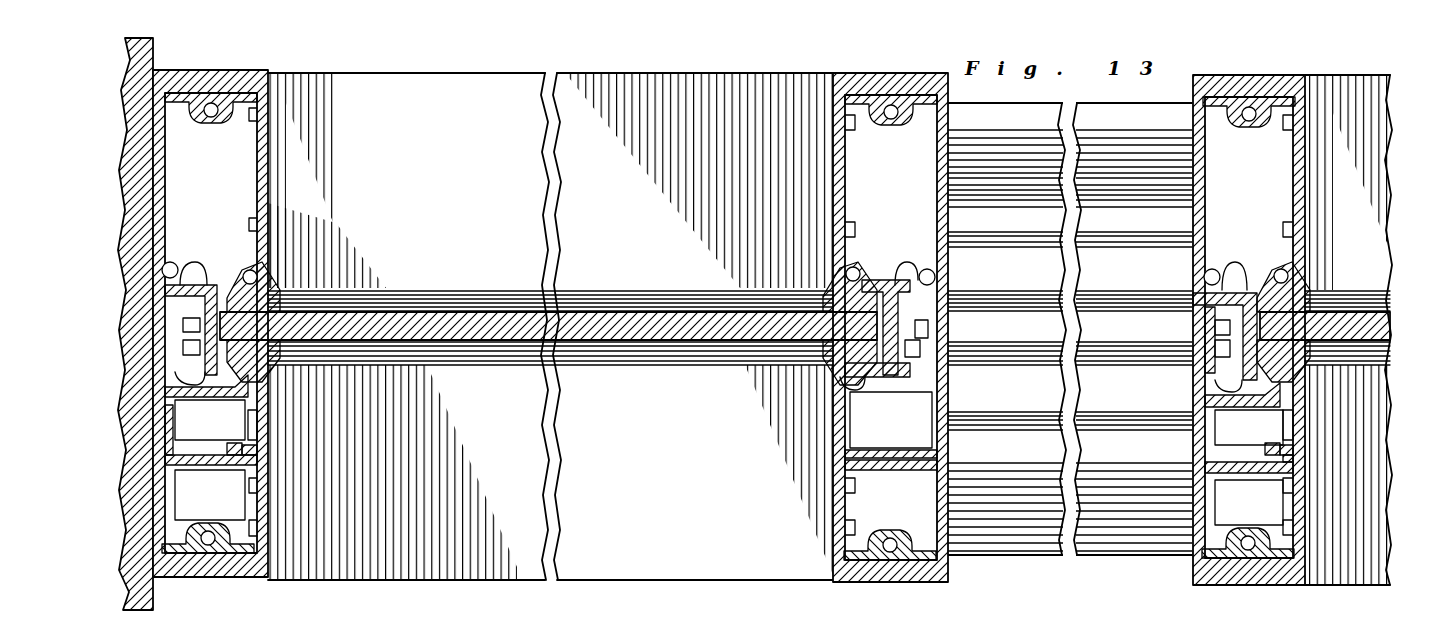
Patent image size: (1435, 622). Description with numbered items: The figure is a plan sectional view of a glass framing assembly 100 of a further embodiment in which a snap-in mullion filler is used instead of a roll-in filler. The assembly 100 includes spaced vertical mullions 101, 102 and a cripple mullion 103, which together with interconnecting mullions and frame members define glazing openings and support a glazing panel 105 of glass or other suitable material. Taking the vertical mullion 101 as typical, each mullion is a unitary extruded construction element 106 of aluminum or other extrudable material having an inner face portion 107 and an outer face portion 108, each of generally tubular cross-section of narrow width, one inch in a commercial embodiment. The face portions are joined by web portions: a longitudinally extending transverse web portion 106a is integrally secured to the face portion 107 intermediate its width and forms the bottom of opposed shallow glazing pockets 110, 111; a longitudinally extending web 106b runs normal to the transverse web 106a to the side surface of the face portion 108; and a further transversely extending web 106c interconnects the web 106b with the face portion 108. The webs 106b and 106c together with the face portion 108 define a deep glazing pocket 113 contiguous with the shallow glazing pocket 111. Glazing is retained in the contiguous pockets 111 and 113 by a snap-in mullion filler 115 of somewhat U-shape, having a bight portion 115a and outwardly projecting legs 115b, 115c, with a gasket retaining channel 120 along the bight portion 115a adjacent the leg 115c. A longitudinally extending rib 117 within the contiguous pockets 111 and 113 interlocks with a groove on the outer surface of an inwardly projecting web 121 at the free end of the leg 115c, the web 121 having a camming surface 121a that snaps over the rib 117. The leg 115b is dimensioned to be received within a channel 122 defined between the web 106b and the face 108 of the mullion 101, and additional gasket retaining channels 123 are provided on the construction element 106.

The glass framing assembly 100 is at (600, 52).
The vertical mullion 101 is at (250, 72).
The vertical mullion 102 is at (870, 74).
The cripple mullion 103 is at (1232, 76).
The glazing panel 105 is at (558, 312).
The construction element 106 is at (264, 158).
The transverse web portion 106a is at (204, 330).
The longitudinally extending web 106b is at (200, 356).
The transversely extending web 106c is at (170, 390).
The inner face portion 107 is at (202, 72).
The outer face portion 108 is at (188, 578).
The shallow glazing pocket 110 is at (176, 298).
The shallow glazing pocket 111 is at (218, 285).
The deep glazing pocket 113 is at (190, 458).
The mullion filler 115 is at (245, 410).
The bight portion 115a is at (190, 440).
The leg 115b is at (212, 528).
The leg 115c is at (262, 428).
The longitudinally extending rib 117 is at (262, 448).
The gasket retaining channel 120 is at (256, 368).
The inwardly projecting web 121 is at (250, 456).
The camming surface 121a is at (214, 544).
The channel 122 is at (175, 418).
The gasket retaining channels 123 is at (216, 262).